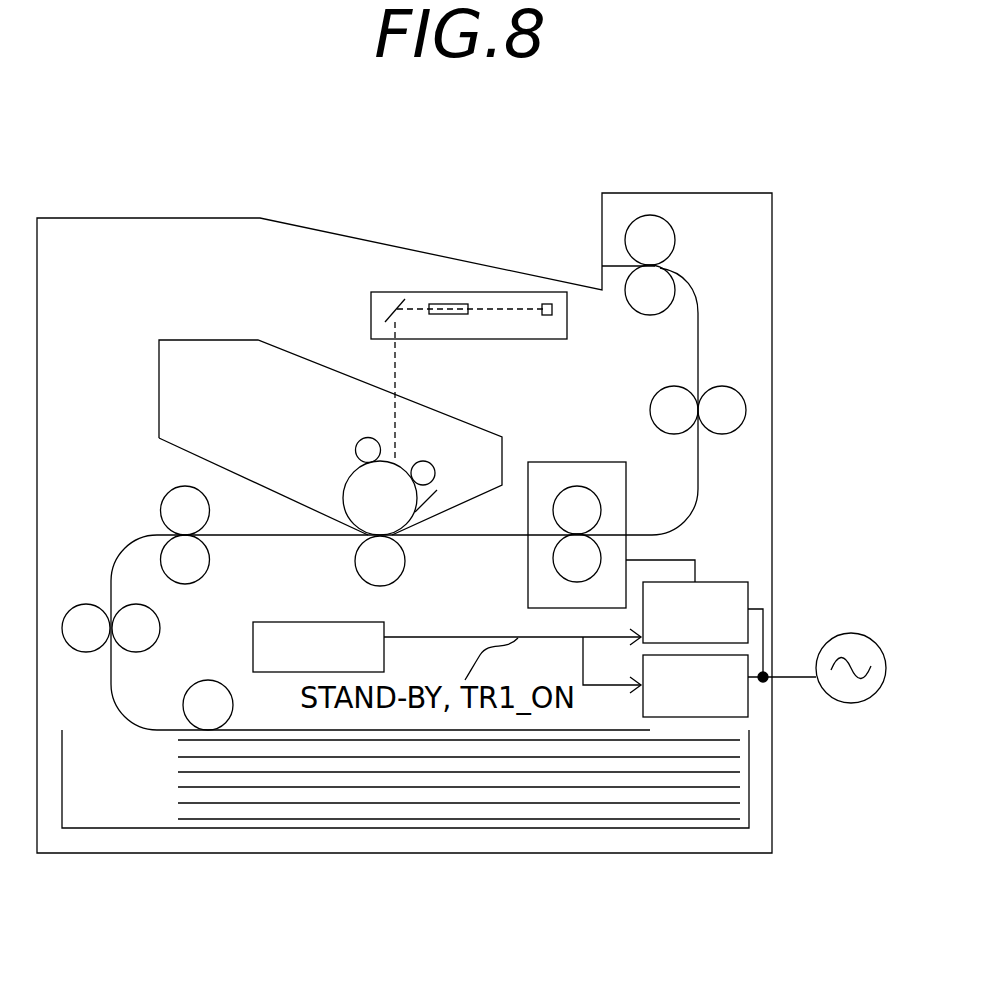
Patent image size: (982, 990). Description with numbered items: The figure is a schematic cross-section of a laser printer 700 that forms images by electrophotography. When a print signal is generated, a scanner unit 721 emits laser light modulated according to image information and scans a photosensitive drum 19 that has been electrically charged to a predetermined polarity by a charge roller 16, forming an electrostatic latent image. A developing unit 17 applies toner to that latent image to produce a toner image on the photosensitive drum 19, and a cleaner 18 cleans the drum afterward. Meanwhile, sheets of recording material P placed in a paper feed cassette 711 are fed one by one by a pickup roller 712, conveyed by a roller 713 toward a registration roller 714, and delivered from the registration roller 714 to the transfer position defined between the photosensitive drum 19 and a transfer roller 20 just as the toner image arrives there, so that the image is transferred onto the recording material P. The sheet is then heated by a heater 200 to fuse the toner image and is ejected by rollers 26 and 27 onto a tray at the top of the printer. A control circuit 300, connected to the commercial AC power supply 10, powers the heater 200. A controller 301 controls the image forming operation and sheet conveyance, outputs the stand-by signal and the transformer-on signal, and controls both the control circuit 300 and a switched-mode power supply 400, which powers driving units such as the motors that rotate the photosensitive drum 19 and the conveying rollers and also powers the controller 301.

The laser printer 700 is at (683, 193).
The scanner unit 721 is at (370, 316).
The photosensitive drum 19 is at (355, 486).
The developing unit 17 is at (358, 441).
The charge roller 16 is at (435, 465).
The cleaner 18 is at (418, 510).
The transfer roller 20 is at (403, 563).
The roller 27 is at (675, 237).
The roller 26 is at (653, 390).
The heater 200 is at (572, 462).
The registration roller 714 is at (165, 493).
The roller 713 is at (86, 652).
The pickup roller 712 is at (188, 722).
The paper feed cassette 711 is at (749, 775).
The recording material P is at (358, 820).
The controller 301 is at (303, 635).
The control circuit 300 is at (718, 582).
The switched-mode power supply 400 is at (748, 708).
The commercial AC power supply 10 is at (846, 633).